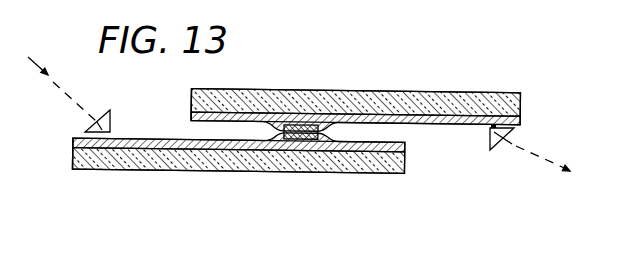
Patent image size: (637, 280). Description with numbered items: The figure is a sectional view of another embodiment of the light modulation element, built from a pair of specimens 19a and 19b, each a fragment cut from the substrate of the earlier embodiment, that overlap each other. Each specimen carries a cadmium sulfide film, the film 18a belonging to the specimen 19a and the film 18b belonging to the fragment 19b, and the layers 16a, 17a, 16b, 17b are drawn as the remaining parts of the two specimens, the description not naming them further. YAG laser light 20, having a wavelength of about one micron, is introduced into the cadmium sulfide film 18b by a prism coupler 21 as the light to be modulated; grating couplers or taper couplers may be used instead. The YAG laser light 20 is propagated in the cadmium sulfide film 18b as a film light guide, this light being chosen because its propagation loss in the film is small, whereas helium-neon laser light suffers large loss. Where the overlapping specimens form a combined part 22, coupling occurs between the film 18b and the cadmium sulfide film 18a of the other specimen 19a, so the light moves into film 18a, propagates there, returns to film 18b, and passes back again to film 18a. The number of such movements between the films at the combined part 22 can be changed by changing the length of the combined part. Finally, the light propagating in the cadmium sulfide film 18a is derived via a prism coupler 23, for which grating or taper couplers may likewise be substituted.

The first optical waveguide plate 16a is at (467, 91).
The first light-guiding film layer 17a is at (304, 127).
The cadmium sulfide film 18a is at (227, 113).
The specimen 19a is at (191, 103).
The second optical waveguide plate 16b is at (288, 163).
The second light-guiding film layer 17b is at (308, 150).
The cadmium sulfide film 18b is at (226, 147).
The fragment 19b is at (73, 164).
The YAG laser light 20 is at (73, 96).
The prism coupler 21 is at (110, 123).
The combined part 22 is at (283, 127).
The prism coupler 23 is at (511, 129).